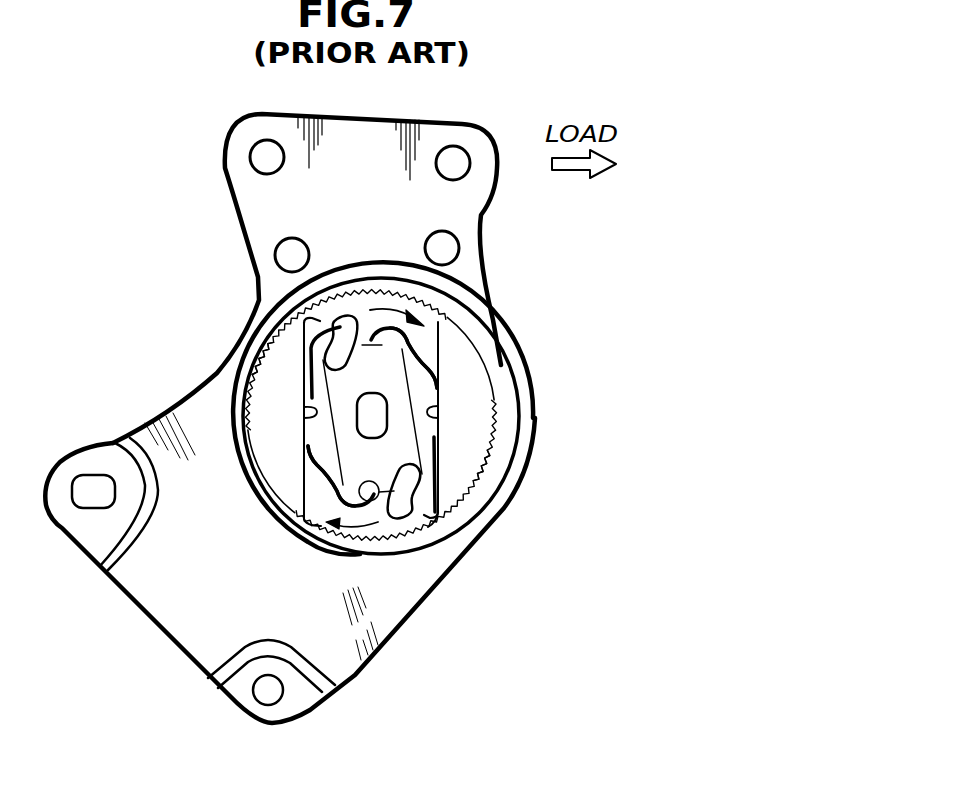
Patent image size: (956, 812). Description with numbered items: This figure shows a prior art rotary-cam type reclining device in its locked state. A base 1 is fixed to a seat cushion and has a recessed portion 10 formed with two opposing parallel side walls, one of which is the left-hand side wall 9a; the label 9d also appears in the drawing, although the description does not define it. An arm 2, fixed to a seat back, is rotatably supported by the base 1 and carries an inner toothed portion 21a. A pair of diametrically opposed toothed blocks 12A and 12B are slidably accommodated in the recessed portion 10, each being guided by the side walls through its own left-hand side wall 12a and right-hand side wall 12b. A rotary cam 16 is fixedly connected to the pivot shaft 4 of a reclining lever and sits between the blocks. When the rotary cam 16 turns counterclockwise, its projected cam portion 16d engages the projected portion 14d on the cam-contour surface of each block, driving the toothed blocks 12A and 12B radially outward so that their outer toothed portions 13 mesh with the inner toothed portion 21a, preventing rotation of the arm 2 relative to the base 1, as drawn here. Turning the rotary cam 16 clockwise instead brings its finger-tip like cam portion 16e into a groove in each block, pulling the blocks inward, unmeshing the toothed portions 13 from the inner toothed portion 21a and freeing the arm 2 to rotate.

The base 1 is at (393, 627).
The arm 2 is at (353, 130).
The pivot shaft 4 is at (362, 428).
The side wall 9a is at (305, 412).
The stopper projection 9d is at (437, 413).
The recessed portion 10 is at (432, 395).
The toothed block 12A is at (420, 341).
The toothed block 12B is at (437, 497).
The left-hand side wall 12a is at (310, 458).
The right-hand side wall 12b is at (262, 338).
The toothed portion 13 is at (340, 320).
The projected portion 14d is at (362, 343).
The rotary cam 16 is at (337, 393).
The projected cam portion 16d is at (382, 345).
The finger-tip like cam portion 16e is at (297, 323).
The inner toothed portion 21a is at (378, 300).